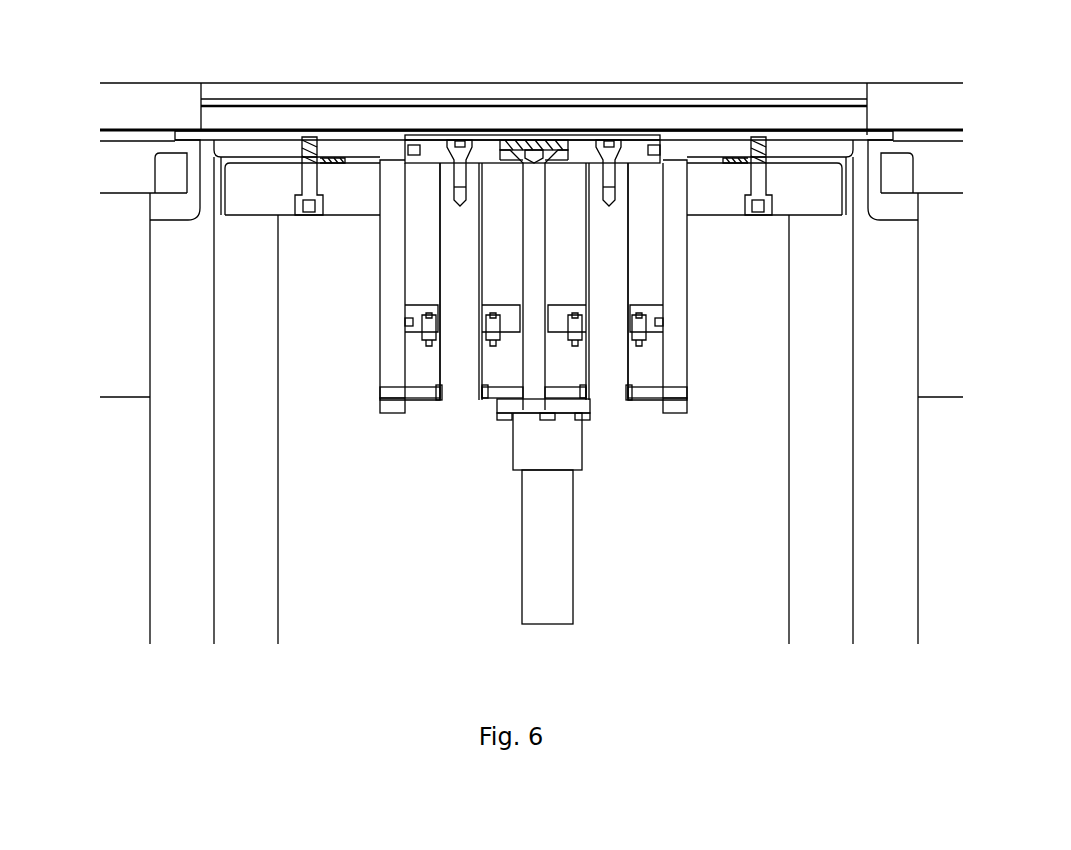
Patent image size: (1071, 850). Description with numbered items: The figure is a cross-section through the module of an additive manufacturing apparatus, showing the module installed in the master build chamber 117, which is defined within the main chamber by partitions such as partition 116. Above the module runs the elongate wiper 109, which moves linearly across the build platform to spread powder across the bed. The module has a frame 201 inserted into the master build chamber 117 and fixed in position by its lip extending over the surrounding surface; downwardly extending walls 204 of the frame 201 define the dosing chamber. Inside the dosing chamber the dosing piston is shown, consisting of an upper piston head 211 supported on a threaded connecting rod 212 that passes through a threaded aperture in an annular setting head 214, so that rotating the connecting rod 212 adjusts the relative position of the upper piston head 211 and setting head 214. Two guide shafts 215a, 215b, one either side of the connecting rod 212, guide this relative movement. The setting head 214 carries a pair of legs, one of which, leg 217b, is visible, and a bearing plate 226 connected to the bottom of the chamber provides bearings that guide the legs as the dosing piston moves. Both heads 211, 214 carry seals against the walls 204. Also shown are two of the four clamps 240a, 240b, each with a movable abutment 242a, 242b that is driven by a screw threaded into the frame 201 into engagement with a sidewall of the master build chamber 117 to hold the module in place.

The elongate wiper 109 is at (905, 104).
The partition 116 is at (163, 295).
The master build chamber 117 is at (130, 172).
The frame 201 is at (255, 145).
The downwardly extending wall 204 is at (380, 279).
The upper piston head 211 is at (429, 151).
The threaded connecting rod 212 is at (538, 213).
The annular setting head 214 is at (654, 321).
The guide shaft 215a is at (454, 392).
The guide shaft 215b is at (604, 402).
The leg 217b is at (557, 538).
The bearing plate 226 is at (402, 400).
The clamp 240a is at (278, 218).
The clamp 240b is at (726, 204).
The movable abutment 242a is at (219, 172).
The movable abutment 242b is at (845, 205).